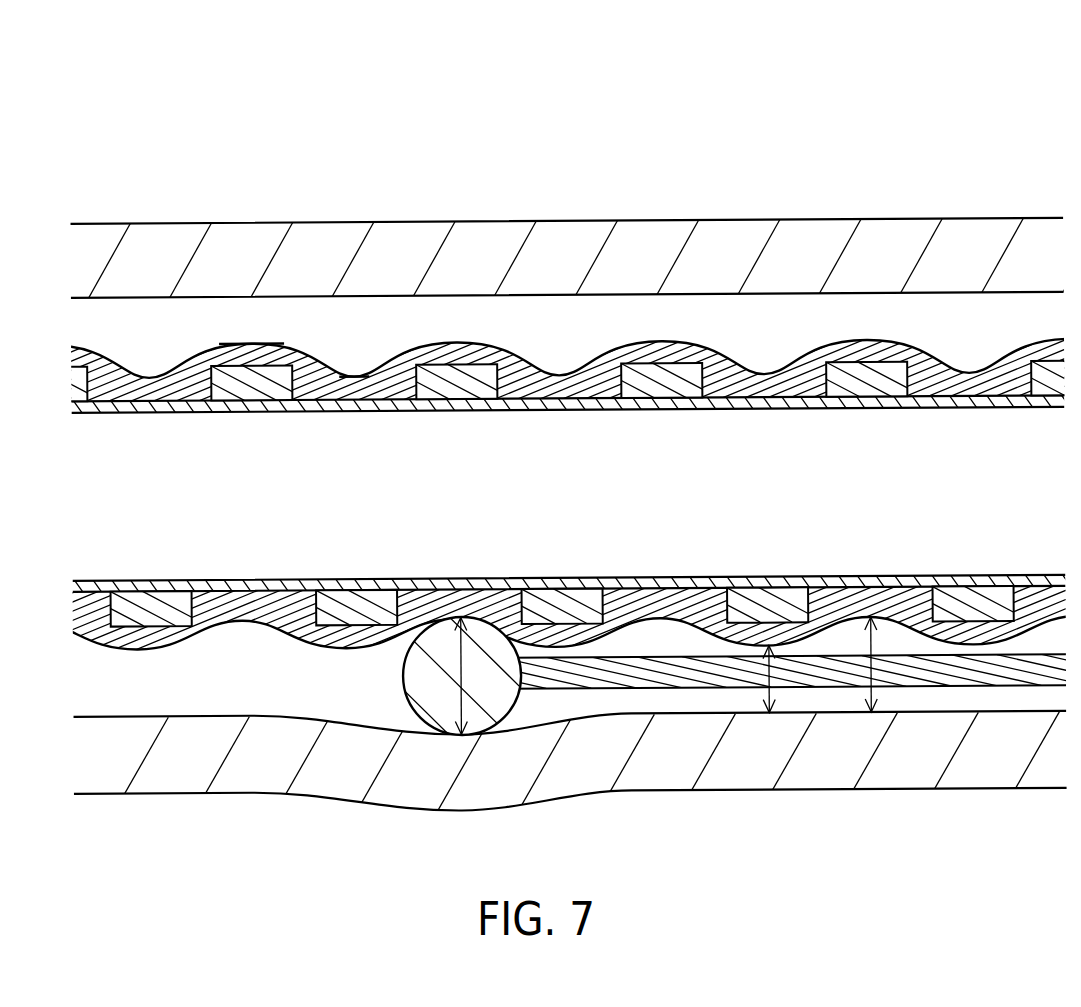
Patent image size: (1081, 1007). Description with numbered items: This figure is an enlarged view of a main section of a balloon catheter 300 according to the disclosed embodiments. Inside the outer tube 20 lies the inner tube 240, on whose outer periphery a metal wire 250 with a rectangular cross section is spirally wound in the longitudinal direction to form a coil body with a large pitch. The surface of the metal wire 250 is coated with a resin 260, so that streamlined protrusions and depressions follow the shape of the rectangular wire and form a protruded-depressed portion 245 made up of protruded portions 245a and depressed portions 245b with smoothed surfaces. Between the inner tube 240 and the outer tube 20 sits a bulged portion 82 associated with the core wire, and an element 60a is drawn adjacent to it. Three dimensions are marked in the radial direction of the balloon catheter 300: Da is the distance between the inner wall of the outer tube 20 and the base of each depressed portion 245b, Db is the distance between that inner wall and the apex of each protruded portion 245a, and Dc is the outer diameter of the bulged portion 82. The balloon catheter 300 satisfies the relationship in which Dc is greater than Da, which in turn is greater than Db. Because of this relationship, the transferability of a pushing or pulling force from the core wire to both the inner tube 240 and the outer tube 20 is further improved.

The outer tube 20 is at (540, 270).
The balloon catheter 300 is at (503, 198).
The protruded-depressed portion 245 is at (452, 175).
The protruded portion 245a is at (257, 342).
The depressed portion 245b is at (355, 376).
The resin 260 is at (540, 263).
The metal wire 250 is at (865, 372).
The inner tube 240 is at (965, 410).
The bulged portion 82 is at (402, 697).
The intermediate layer 60a is at (662, 676).
The outer diameter of the bulged portion Dc is at (462, 673).
The distance between outer tube inner wall and protruded portion apex Db is at (783, 685).
The distance between outer tube inner wall and depressed portion base Da is at (877, 663).